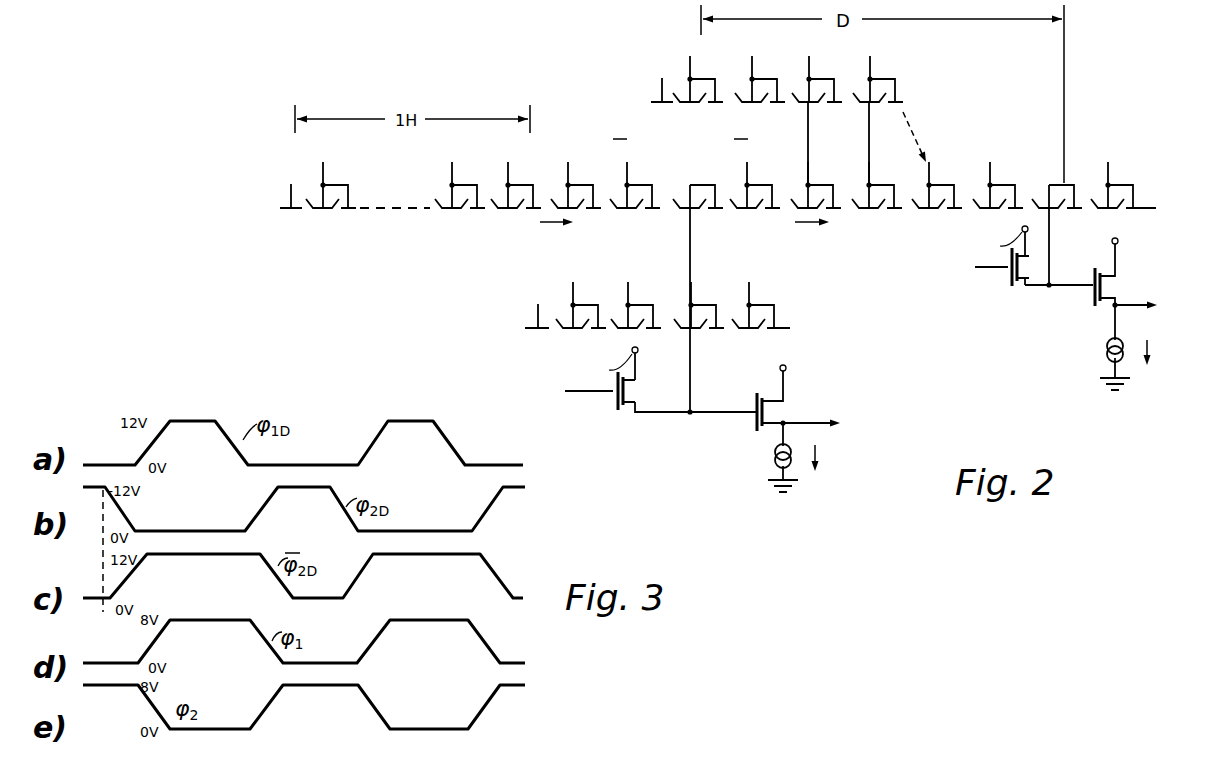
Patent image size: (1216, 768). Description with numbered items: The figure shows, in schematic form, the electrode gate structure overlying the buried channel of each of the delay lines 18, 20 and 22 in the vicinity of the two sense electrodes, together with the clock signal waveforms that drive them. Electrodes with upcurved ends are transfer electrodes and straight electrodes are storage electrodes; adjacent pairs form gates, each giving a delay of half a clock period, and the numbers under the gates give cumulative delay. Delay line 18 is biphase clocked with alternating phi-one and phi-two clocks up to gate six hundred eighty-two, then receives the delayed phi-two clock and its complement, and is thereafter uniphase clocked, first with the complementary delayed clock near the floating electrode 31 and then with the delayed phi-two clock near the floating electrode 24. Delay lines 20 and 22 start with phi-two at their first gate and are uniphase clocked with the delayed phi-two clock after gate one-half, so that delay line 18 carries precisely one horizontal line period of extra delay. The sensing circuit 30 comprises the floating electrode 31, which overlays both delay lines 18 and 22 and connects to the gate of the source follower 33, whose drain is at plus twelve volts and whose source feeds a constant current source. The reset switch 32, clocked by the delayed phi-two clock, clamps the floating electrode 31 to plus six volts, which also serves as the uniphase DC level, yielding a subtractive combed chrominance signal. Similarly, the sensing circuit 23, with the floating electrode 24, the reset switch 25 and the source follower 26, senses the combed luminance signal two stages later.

The delay line 18 is at (248, 182).
The delay line 20 is at (625, 45).
The delay line 22 is at (490, 305).
The sensing circuit 23 is at (1059, 305).
The floating electrode 24 is at (1053, 272).
The reset switch 25 is at (1020, 286).
The source follower 26 is at (1103, 306).
The sensing circuit 30 is at (723, 392).
The floating electrode 31 is at (697, 258).
The reset switch 32 is at (626, 410).
The source follower 33 is at (788, 392).